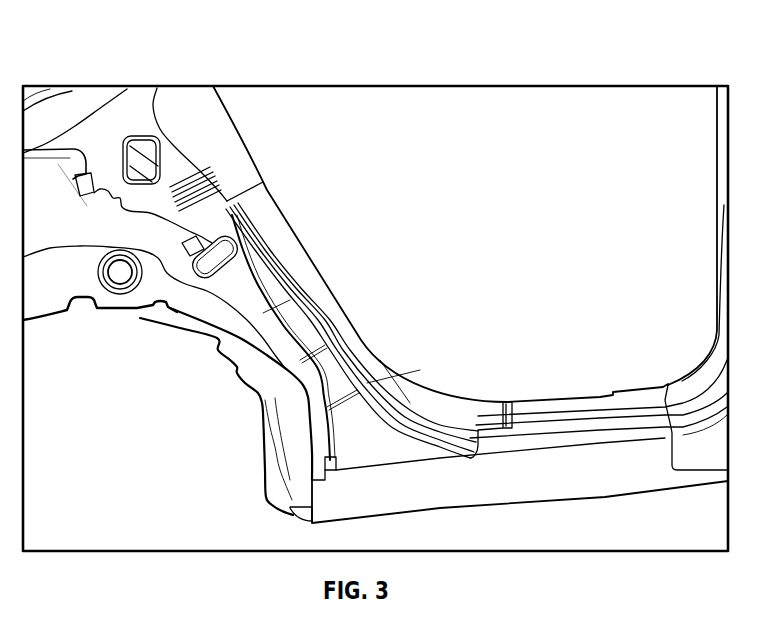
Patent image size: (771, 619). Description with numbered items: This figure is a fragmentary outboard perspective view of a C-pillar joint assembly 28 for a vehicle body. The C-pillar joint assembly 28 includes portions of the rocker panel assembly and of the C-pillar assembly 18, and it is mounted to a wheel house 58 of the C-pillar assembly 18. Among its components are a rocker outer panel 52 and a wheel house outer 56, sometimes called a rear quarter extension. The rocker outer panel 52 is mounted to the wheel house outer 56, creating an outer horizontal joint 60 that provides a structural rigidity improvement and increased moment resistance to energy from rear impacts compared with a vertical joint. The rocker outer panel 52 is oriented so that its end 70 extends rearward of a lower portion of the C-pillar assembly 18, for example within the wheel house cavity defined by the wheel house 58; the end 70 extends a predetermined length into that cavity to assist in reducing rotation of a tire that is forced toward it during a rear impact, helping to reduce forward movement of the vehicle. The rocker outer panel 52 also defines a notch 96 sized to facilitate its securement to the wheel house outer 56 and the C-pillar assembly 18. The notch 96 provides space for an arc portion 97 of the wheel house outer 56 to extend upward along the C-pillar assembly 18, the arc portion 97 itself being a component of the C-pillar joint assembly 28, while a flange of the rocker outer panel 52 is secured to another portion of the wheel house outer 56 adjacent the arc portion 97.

The C-pillar assembly 18 is at (191, 87).
The C-pillar joint assembly 28 is at (483, 201).
The wheel house outer 56 is at (332, 293).
The arc portion 97 is at (370, 384).
The outer horizontal joint 60 is at (418, 463).
The notch 96 is at (479, 430).
The rocker outer panel 52 is at (603, 496).
The end of the rocker outer panel 70 is at (310, 522).
The wheel house 58 is at (149, 318).